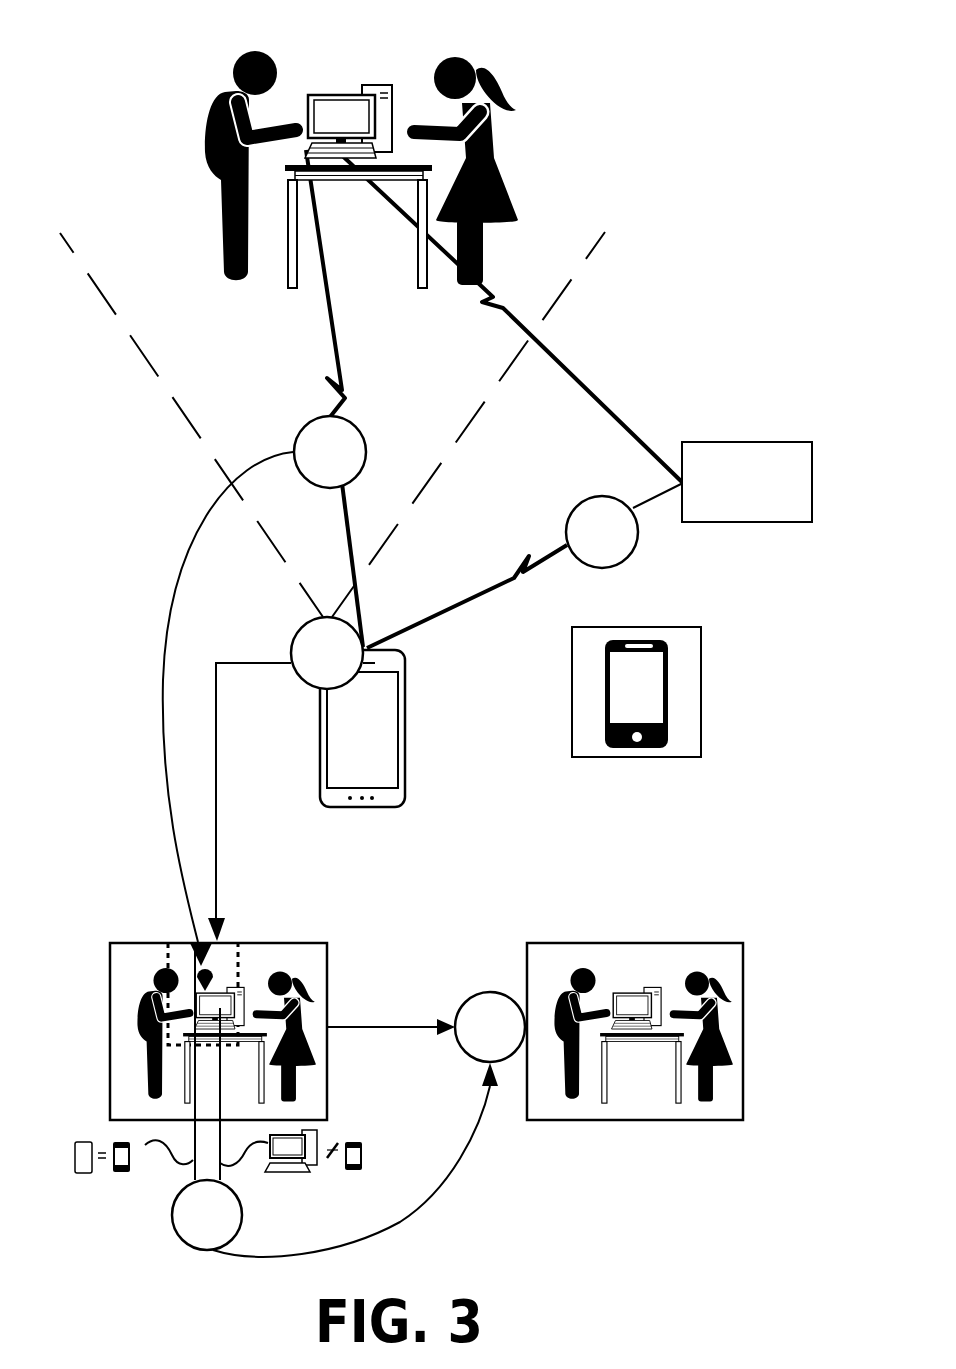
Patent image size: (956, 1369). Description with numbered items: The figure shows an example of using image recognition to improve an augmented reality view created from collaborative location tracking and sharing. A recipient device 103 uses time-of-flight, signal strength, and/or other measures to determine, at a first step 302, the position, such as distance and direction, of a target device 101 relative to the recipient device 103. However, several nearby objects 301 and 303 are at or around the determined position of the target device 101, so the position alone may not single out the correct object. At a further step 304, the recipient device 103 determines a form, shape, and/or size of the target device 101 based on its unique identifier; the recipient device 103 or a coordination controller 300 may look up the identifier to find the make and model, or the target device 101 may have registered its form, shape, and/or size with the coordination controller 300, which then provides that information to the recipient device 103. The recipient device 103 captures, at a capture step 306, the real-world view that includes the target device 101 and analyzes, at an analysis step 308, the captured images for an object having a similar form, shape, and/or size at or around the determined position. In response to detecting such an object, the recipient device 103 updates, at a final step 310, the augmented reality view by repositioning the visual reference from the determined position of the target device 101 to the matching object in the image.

The target device 101 is at (300, 130).
The recipient device 103 is at (362, 744).
The coordination controller 300 is at (747, 482).
The nearby object 301 is at (343, 95).
The position determination step 302 is at (330, 452).
The nearby object 303 is at (396, 118).
The form determination step 304 is at (642, 627).
The capture step 306 is at (327, 653).
The image analysis step 308 is at (207, 1215).
The augmented reality update step 310 is at (490, 1027).